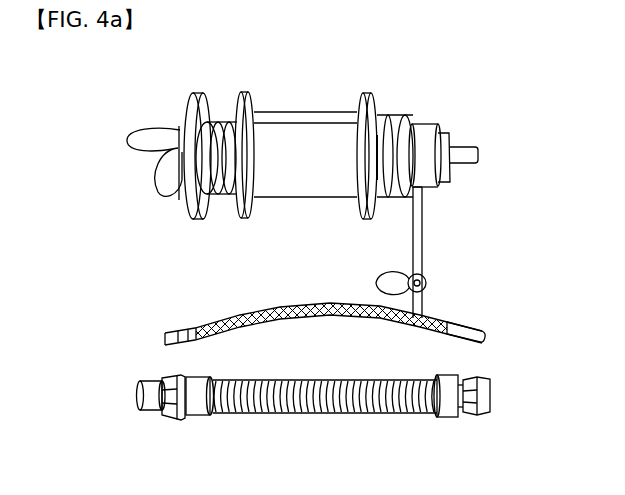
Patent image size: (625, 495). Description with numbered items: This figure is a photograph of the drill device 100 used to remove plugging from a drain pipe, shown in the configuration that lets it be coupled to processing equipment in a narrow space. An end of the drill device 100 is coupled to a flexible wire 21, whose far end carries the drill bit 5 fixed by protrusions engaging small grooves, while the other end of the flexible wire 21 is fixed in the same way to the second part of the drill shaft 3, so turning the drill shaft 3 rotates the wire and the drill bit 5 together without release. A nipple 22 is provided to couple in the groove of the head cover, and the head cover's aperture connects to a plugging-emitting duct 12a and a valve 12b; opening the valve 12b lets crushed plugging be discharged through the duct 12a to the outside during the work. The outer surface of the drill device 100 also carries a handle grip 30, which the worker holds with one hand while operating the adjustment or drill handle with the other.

The drill device 100 is at (184, 72).
The handle grip 30 is at (304, 111).
The drill shaft 3 is at (463, 146).
The plugging-emitting duct 12a is at (425, 230).
The valve 12b is at (375, 285).
The nipple 22 is at (307, 304).
The drill bit 5 is at (463, 322).
The flexible wire 21 is at (258, 378).